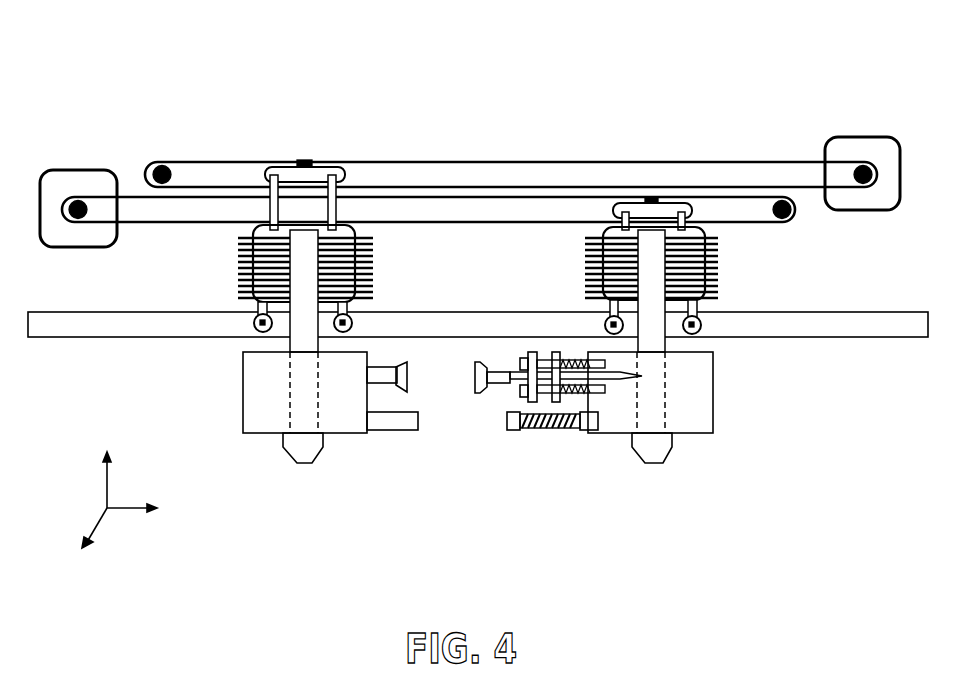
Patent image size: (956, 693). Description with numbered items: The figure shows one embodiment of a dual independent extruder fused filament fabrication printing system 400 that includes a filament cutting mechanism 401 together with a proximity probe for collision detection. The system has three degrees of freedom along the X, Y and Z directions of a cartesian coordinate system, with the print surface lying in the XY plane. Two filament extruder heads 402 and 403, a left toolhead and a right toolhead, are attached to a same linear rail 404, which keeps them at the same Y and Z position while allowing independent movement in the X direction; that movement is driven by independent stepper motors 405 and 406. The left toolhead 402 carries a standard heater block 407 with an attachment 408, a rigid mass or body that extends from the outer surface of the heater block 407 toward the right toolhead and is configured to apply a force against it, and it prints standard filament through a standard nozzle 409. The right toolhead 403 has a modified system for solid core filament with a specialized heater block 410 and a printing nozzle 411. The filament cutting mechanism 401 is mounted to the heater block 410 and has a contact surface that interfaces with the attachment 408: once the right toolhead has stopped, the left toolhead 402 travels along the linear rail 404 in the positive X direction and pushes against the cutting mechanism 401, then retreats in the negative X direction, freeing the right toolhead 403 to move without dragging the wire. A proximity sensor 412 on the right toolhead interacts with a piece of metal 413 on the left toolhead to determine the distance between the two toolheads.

The dual independent extruder FFF 3D printing system 400 is at (100, 127).
The filament cutting mechanism 401 is at (498, 383).
The left filament extruder head 402 is at (253, 267).
The right filament extruder head 403 is at (600, 254).
The linear rail 404 is at (173, 323).
The stepper motor 405 is at (80, 183).
The stepper motor 406 is at (868, 145).
The heater block 407 is at (268, 382).
The attachment 408 is at (400, 377).
The FFF nozzle 409 is at (300, 422).
The heater block 410 is at (697, 390).
The printing nozzle 411 is at (648, 447).
The proximity sensor 412 is at (535, 432).
The piece of metal 413 is at (395, 427).